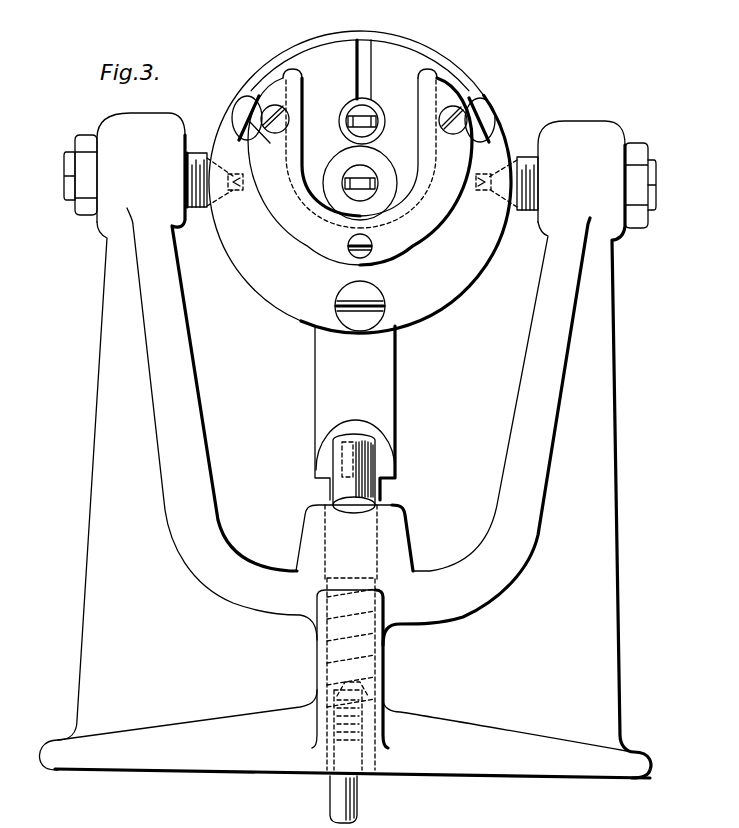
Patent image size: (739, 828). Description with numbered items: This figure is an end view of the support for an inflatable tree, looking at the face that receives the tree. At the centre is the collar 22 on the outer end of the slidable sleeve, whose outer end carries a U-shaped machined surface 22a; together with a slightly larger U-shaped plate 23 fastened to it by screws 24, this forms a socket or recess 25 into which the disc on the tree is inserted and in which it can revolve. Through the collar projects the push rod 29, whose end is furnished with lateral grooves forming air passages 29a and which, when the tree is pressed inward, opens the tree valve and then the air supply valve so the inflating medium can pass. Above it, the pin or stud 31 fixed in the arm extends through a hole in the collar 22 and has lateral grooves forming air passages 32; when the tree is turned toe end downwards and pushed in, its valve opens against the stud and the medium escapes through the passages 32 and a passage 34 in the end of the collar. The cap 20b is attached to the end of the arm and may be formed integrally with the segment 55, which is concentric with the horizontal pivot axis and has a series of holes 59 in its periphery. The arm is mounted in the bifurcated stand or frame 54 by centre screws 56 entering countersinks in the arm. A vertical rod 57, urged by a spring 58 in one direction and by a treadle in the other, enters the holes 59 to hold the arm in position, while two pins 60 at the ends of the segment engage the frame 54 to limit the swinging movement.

The cap 20b is at (263, 287).
The collar 22 is at (401, 53).
The U-shaped machined surface 22a is at (238, 120).
The U-shaped plate 23 is at (303, 165).
The screws 24 is at (357, 258).
The socket or recess 25 is at (418, 190).
The push rod 29 is at (368, 172).
The air passages 29a is at (348, 188).
The pin or stud 31 is at (371, 112).
The air passages 32 is at (356, 110).
The passage 34 is at (363, 47).
The bifurcated stand or frame 54 is at (90, 486).
The segment 55 is at (396, 450).
The centre screws 56 is at (193, 155).
The vertical rod 57 is at (365, 543).
The spring 58 is at (372, 654).
The holes 59 is at (340, 448).
The pins 60 is at (335, 487).